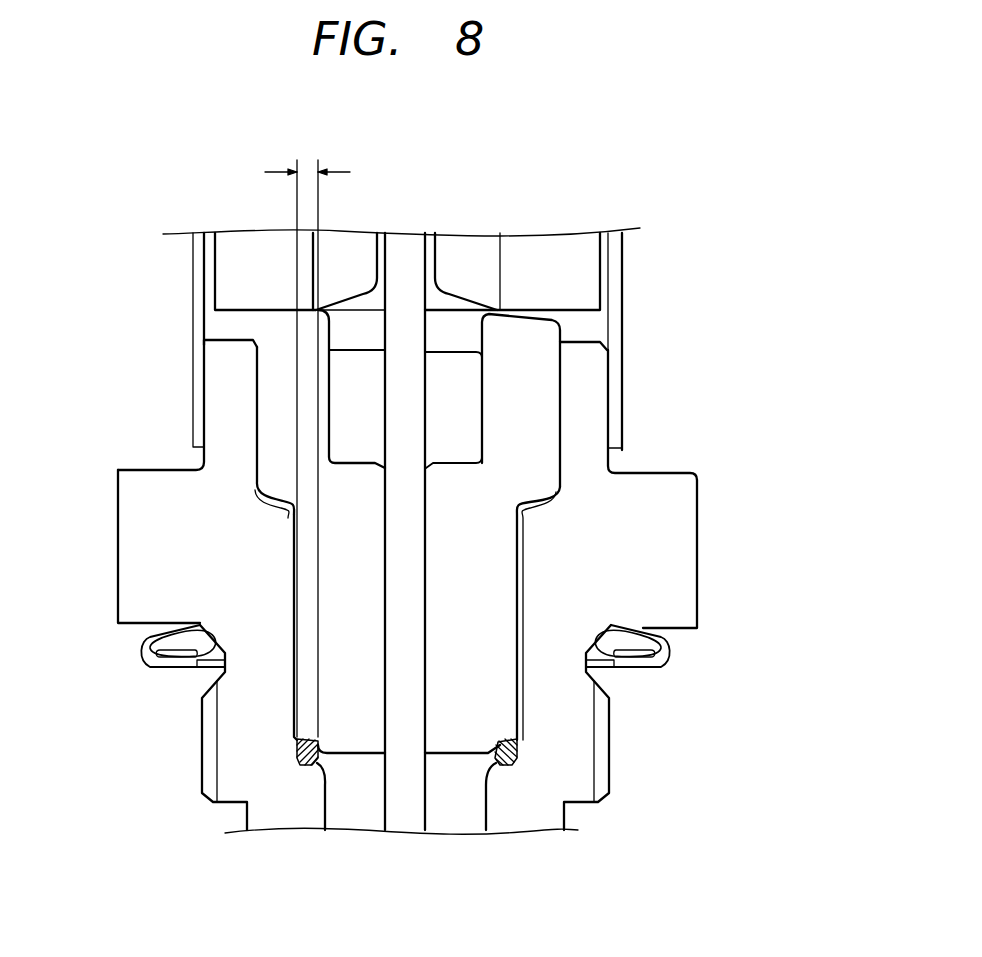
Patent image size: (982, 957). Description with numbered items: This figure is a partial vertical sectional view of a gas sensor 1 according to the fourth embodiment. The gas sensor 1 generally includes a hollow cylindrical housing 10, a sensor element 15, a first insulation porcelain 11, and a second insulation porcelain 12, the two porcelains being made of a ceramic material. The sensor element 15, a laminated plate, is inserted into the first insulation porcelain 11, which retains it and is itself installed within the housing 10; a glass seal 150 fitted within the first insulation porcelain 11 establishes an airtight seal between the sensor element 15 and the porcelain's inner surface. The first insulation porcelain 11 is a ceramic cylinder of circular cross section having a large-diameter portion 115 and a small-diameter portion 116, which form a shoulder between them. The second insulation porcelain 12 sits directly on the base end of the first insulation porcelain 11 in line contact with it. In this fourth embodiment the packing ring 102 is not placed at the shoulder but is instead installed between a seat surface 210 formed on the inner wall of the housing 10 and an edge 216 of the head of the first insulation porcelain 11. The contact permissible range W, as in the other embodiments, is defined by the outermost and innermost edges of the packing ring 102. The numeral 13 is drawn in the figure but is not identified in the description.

The gas sensor 1 is at (732, 650).
The hollow cylindrical housing 10 is at (152, 513).
The first insulation porcelain 11 is at (295, 582).
The second insulation porcelain 12 is at (233, 263).
The lip of holder 13 is at (307, 310).
The sensor element 15 is at (407, 782).
The packing ring 102 is at (303, 765).
The large-diameter portion 115 is at (595, 377).
The small-diameter portion 116 is at (498, 567).
The glass seal 150 is at (458, 417).
The seat surface 210 is at (515, 767).
The edge of the head of the first insulation porcelain 216 is at (306, 740).
The contact permissible range W is at (310, 170).